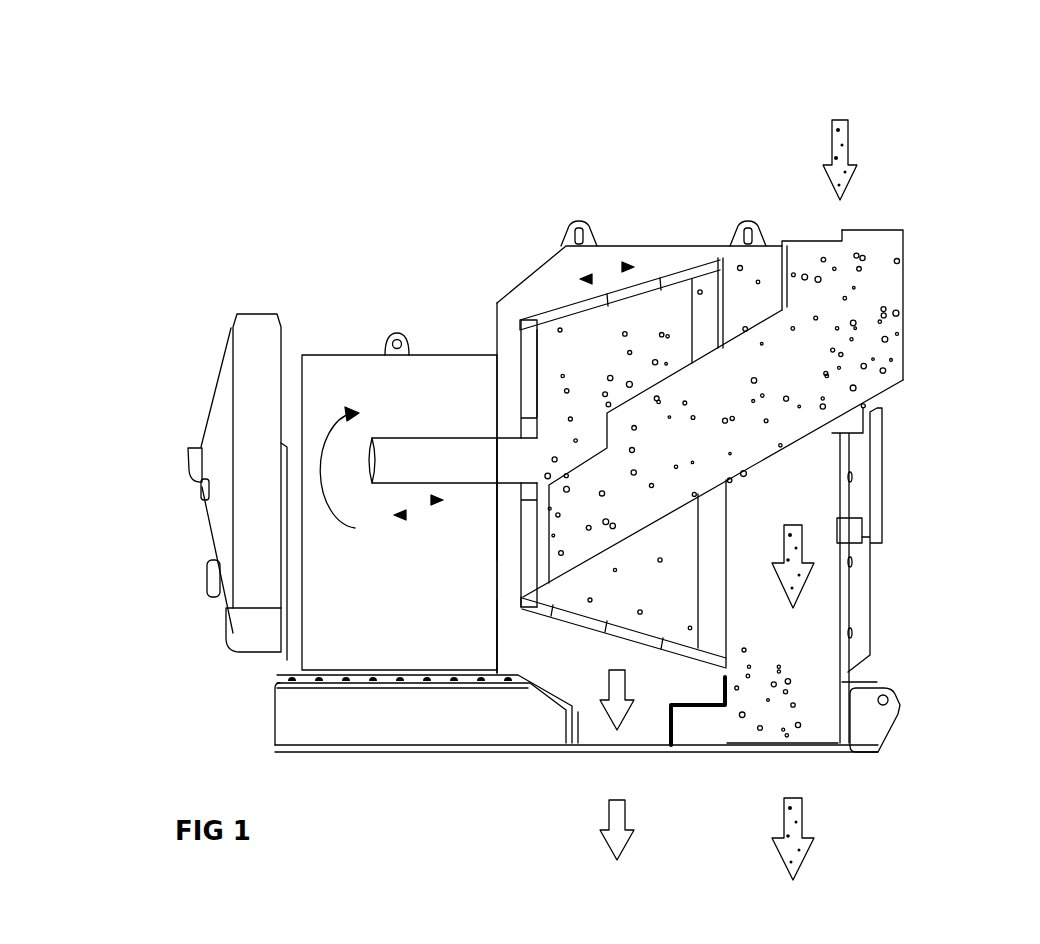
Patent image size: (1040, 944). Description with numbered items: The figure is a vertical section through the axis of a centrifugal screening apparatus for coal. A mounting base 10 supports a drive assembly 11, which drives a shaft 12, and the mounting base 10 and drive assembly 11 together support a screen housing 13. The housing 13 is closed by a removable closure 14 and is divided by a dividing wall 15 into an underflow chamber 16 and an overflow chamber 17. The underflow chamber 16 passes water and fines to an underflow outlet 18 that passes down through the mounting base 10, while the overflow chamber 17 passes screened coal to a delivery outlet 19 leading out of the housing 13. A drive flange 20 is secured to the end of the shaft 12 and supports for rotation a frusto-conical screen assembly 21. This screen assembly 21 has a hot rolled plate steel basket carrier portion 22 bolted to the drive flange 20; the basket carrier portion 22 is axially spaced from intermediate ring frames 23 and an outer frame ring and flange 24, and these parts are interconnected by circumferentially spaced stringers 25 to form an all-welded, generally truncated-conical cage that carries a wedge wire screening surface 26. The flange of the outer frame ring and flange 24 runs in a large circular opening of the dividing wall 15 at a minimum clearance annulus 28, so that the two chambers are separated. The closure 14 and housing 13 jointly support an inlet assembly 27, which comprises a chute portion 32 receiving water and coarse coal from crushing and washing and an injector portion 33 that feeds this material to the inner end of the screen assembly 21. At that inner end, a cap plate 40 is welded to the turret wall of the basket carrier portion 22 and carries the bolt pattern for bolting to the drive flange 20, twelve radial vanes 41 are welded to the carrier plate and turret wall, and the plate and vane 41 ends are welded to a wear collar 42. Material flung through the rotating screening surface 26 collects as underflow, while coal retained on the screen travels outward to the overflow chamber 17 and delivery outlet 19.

The mounting base 10 is at (512, 752).
The drive assembly 11 is at (439, 578).
The shaft 12 is at (457, 345).
The screen housing 13 is at (665, 245).
The removable closure 14 is at (862, 488).
The dividing wall 15 is at (717, 743).
The underflow chamber 16 is at (577, 668).
The overflow chamber 17 is at (822, 644).
The underflow outlet 18 is at (637, 742).
The delivery outlet 19 is at (810, 748).
The drive flange 20 is at (517, 493).
The frusto-conical screen assembly 21 is at (568, 362).
The basket carrier portion 22 is at (538, 380).
The intermediate ring frames 23 is at (673, 280).
The outer frame ring and flange 24 is at (735, 655).
The stringers 25 is at (686, 268).
The wedge wire screening surface 26 is at (627, 299).
The inlet assembly 27 is at (738, 255).
The minimum clearance annulus 28 is at (722, 668).
The chute portion 32 is at (868, 270).
The injector portion 33 is at (689, 470).
The cap plate 40 is at (538, 440).
The radial vanes 41 is at (528, 360).
The wear collar 42 is at (522, 600).